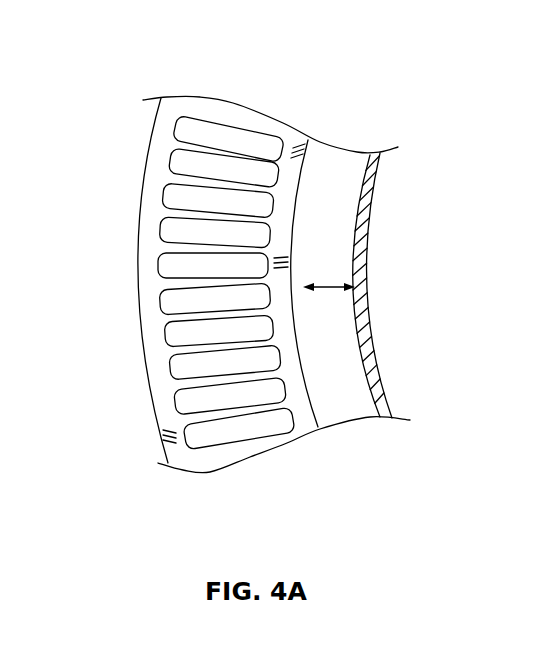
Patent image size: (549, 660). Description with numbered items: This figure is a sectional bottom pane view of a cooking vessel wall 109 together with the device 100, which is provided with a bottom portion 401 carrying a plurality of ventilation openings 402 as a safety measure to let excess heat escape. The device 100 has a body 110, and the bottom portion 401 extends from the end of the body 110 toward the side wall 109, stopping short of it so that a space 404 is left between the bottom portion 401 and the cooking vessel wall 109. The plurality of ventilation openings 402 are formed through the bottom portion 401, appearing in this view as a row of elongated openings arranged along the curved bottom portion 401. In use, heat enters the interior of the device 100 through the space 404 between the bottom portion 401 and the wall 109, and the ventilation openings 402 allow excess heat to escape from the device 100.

The device 100 is at (238, 48).
The body 110 is at (147, 245).
The bottom portion 401 is at (167, 137).
The plurality of ventilation openings 402 is at (190, 302).
The space 404 is at (368, 280).
The cooking vessel wall 109 is at (372, 328).